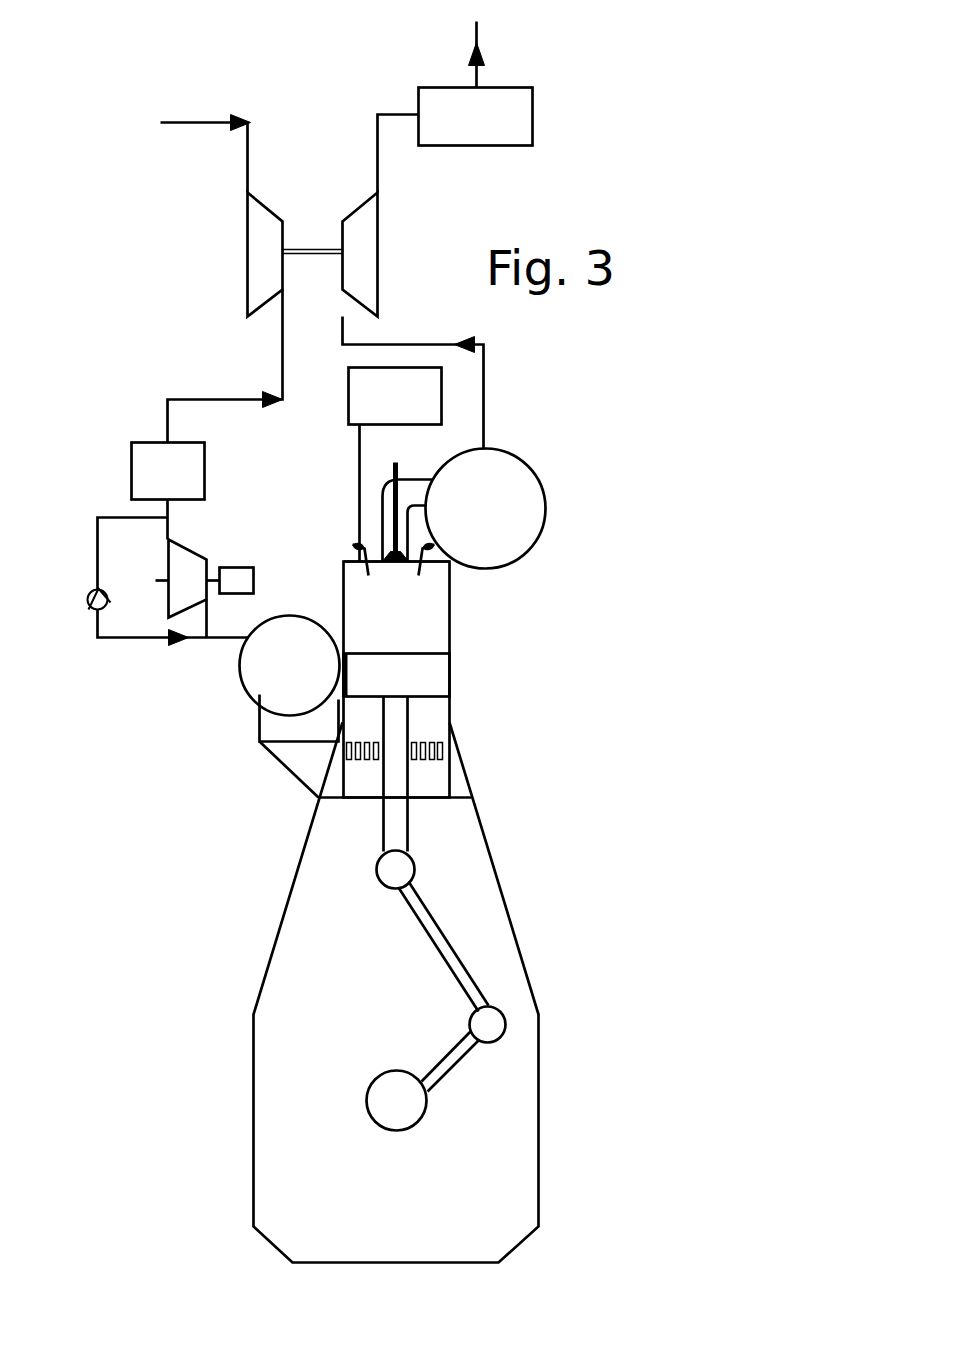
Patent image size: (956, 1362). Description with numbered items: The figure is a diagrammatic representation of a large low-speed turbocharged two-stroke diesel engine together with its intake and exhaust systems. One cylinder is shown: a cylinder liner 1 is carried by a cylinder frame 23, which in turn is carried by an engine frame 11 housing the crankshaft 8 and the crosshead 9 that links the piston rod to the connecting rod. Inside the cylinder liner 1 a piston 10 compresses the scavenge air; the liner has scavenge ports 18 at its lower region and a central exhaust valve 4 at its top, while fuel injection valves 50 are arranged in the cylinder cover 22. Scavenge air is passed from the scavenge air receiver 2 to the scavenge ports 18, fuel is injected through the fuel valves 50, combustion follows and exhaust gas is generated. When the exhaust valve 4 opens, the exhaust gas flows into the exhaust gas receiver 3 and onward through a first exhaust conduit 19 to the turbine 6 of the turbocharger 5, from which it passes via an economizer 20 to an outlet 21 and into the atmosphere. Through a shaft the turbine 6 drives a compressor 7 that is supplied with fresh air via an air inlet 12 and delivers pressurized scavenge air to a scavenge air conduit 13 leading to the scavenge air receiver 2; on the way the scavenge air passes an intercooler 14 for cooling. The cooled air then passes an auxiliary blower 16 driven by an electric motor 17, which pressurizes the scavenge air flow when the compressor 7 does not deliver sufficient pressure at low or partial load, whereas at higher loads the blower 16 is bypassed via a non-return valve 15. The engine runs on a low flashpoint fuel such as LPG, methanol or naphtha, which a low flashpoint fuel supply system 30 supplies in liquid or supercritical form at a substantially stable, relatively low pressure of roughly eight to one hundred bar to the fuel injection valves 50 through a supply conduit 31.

The cylinder liner 1 is at (450, 585).
The scavenge air receiver 2 is at (243, 688).
The exhaust gas receiver 3 is at (525, 553).
The exhaust valve 4 is at (402, 478).
The turbocharger 5 is at (230, 188).
The turbine 6 is at (380, 258).
The compressor 7 is at (247, 218).
The crankshaft 8 is at (446, 1063).
The crosshead 9 is at (400, 870).
The piston 10 is at (440, 672).
The engine frame 11 is at (287, 975).
The air inlet 12 is at (250, 150).
The scavenge air conduit 13 is at (165, 410).
The intercooler 14 is at (168, 471).
The non-return valve 15 is at (90, 603).
The auxiliary blower 16 is at (163, 586).
The electric motor 17 is at (237, 568).
The scavenge ports 18 is at (447, 748).
The first exhaust conduit 19 is at (405, 345).
The economizer 20 is at (476, 117).
The outlet 21 is at (473, 70).
The cylinder cover 22 is at (347, 558).
The cylinder frame 23 is at (470, 785).
The low flashpoint fuel supply system 30 is at (395, 396).
The supply conduit 31 is at (357, 470).
The fuel injection valves 50 is at (428, 548).